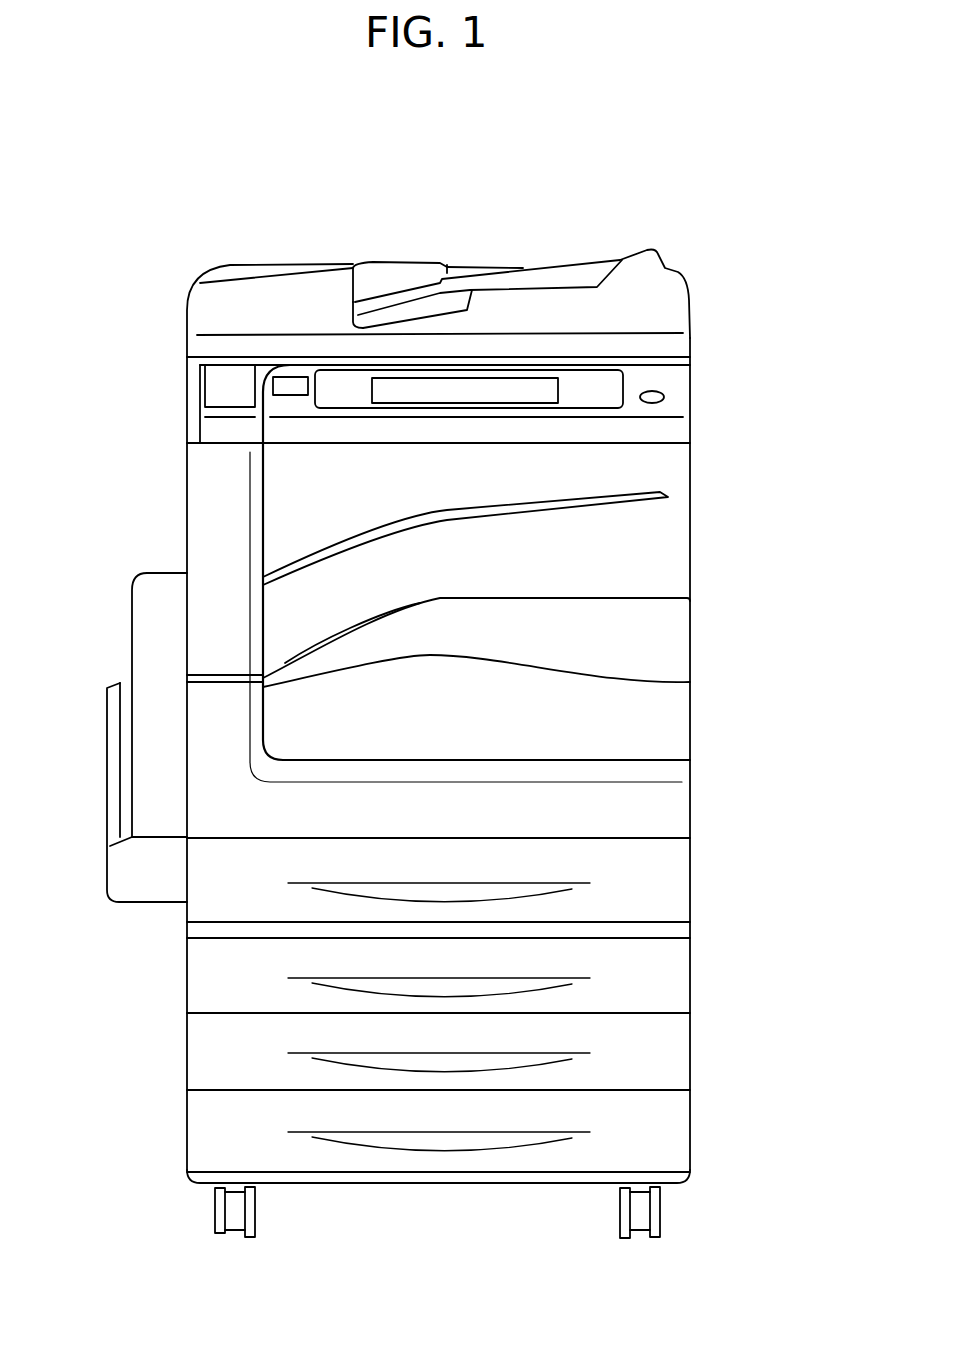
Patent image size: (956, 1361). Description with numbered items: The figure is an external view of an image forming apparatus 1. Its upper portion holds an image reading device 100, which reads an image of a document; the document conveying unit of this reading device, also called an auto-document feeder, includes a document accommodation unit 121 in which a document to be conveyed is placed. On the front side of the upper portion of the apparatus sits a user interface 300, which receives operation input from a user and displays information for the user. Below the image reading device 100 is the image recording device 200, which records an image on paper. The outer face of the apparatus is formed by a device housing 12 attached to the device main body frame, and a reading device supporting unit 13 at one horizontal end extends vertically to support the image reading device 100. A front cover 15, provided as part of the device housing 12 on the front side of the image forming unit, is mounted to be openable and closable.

The image forming apparatus 1 is at (175, 218).
The image reading device 100 is at (168, 336).
The document accommodation unit 121 is at (278, 263).
The user interface 300 is at (577, 412).
The reading device supporting unit 13 is at (263, 518).
The device housing 12 is at (690, 550).
The front cover 15 is at (690, 795).
The image recording device 200 is at (727, 722).